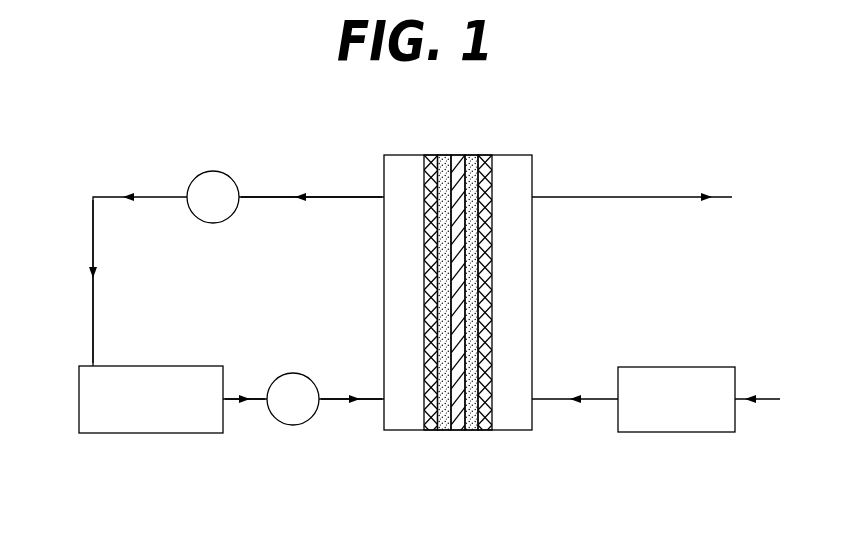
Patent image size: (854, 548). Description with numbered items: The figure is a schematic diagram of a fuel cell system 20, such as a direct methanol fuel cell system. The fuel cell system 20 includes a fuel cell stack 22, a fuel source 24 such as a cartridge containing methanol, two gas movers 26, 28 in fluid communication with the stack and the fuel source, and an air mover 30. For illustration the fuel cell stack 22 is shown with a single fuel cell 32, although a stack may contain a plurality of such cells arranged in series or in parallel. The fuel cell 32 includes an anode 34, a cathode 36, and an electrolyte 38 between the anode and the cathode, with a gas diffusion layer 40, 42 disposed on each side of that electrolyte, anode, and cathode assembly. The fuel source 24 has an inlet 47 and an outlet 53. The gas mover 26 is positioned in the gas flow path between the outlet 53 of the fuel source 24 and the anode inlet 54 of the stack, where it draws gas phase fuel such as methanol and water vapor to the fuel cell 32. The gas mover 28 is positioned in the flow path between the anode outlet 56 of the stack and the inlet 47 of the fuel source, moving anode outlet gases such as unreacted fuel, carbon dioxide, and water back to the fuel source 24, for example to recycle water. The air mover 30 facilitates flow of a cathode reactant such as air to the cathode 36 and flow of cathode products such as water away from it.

The fuel cell system 20 is at (628, 102).
The fuel cell stack 22 is at (477, 318).
The fuel source 24 is at (142, 433).
The gas mover 26 is at (291, 425).
The gas mover 28 is at (212, 171).
The air mover 30 is at (685, 367).
The fuel cell 32 is at (458, 318).
The anode 34 is at (443, 430).
The cathode 36 is at (471, 430).
The electrolyte 38 is at (458, 430).
The gas diffusion layer 40 is at (430, 430).
The gas diffusion layer 42 is at (485, 430).
The inlet 47 is at (93, 331).
The outlet 53 is at (233, 399).
The anode inlet 54 is at (366, 399).
The anode outlet 56 is at (341, 196).